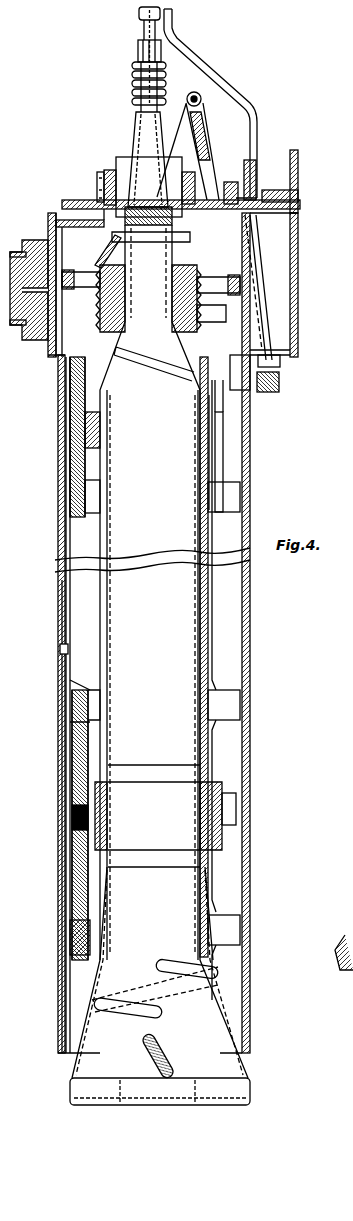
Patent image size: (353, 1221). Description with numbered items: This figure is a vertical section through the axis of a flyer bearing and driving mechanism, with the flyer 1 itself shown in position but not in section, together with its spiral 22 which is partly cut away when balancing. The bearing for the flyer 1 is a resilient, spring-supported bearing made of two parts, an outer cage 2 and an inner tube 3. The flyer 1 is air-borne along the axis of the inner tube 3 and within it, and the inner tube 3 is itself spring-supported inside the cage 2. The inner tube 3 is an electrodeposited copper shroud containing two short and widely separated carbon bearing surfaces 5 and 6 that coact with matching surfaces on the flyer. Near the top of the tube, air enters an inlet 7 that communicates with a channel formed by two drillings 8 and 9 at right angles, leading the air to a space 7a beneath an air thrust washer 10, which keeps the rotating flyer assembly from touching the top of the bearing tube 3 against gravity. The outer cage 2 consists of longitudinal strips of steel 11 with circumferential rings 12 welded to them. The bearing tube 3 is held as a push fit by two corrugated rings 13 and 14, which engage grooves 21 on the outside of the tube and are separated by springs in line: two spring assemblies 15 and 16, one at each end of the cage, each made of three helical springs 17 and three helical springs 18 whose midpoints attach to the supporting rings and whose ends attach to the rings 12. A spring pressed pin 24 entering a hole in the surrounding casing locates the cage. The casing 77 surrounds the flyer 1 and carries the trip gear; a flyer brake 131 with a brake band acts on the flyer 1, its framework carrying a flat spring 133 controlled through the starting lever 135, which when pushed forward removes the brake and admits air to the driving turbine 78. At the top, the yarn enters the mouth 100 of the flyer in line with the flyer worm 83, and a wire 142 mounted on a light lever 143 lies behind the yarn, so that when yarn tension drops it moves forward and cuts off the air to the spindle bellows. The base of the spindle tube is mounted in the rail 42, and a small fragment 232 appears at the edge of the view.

The flyer 1 is at (172, 352).
The outer cage 2 is at (218, 534).
The inner tube 3 is at (206, 498).
The carbon bearing surface 5 is at (62, 200).
The carbon bearing surface 6 is at (220, 800).
The inlet 7 is at (220, 316).
The space 7a is at (300, 188).
The drilling 8 is at (198, 270).
The drilling 9 is at (200, 305).
The air thrust washer 10 is at (262, 192).
The longitudinal strips of steel 11 is at (64, 603).
The circumferential rings 12 is at (232, 370).
The corrugated ring 13 is at (218, 436).
The corrugated ring 14 is at (230, 812).
The spring assembly 15 is at (72, 428).
The spring assembly 16 is at (88, 865).
The helical spring 17 is at (70, 395).
The helical spring 18 is at (72, 750).
The grooves 21 is at (205, 452).
The spiral 22 is at (190, 372).
The spring pressed pin 24 is at (60, 650).
The rail 42 is at (352, 1002).
The casing 77 is at (250, 548).
The turbine 78 is at (96, 250).
The flyer worm 83 is at (133, 78).
The mouth 100 is at (140, 26).
The flyer brake 131 is at (108, 170).
The flat spring 133 is at (232, 185).
The starting lever 135 is at (92, 198).
The wire 142 is at (203, 88).
The light lever 143 is at (270, 197).
The link 232 is at (208, 150).